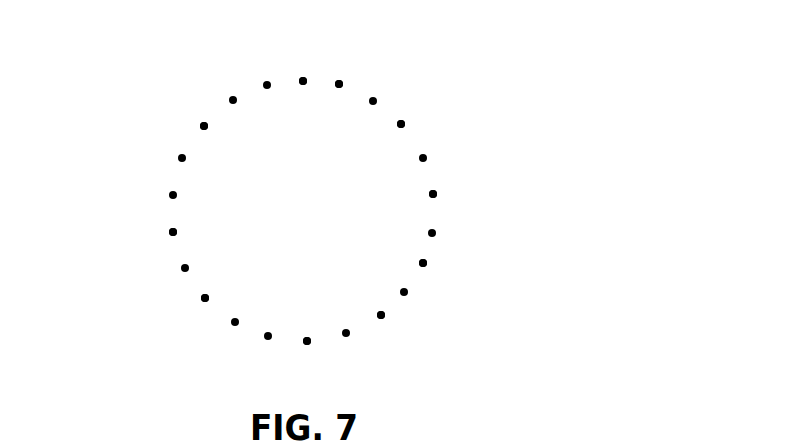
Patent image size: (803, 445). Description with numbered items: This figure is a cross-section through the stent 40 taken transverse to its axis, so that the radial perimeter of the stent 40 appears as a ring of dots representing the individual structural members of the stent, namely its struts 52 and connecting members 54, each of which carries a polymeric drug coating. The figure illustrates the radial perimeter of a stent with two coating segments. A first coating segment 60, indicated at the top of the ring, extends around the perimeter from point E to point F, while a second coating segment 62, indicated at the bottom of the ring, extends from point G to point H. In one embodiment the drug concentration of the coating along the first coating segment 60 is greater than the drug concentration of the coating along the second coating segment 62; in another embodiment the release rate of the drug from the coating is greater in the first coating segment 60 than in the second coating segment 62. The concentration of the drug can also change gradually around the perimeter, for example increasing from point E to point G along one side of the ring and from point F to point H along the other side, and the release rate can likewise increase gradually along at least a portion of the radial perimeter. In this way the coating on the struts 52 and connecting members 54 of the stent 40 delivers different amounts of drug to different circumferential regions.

The stent 40 is at (497, 135).
The strut 52 is at (434, 195).
The connecting member 54 is at (340, 83).
The first coating segment 60 is at (297, 65).
The second coating segment 62 is at (299, 357).
The point E is at (203, 125).
The point F is at (402, 123).
The point G is at (204, 299).
The point H is at (424, 264).